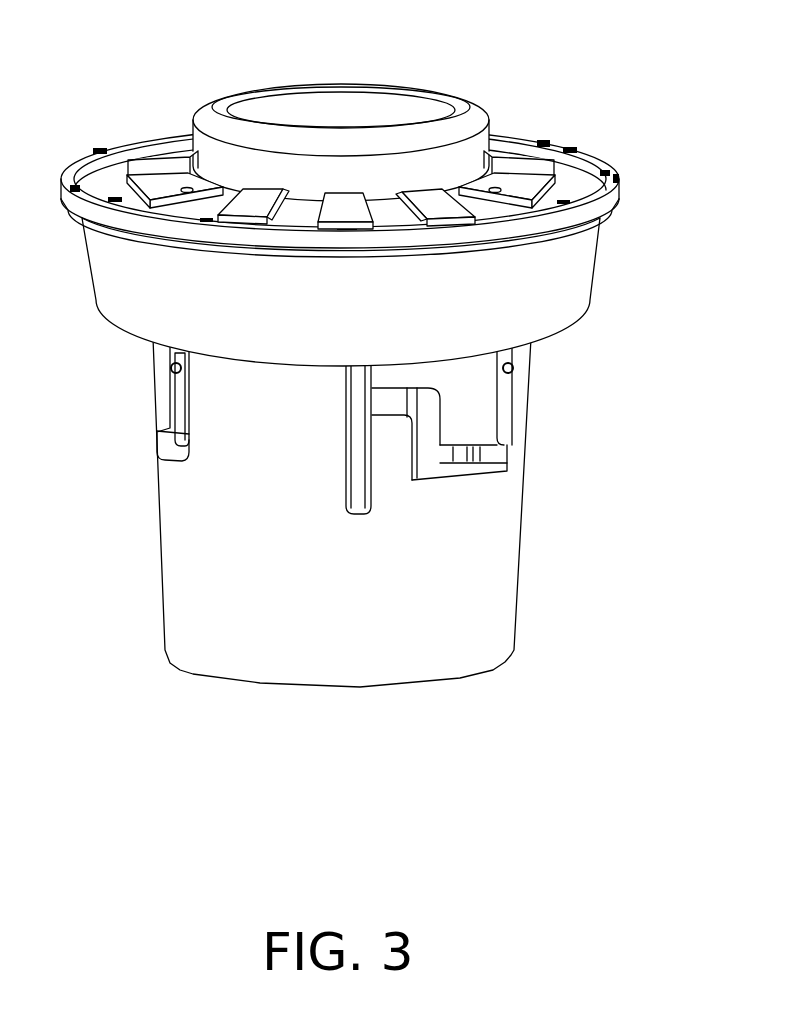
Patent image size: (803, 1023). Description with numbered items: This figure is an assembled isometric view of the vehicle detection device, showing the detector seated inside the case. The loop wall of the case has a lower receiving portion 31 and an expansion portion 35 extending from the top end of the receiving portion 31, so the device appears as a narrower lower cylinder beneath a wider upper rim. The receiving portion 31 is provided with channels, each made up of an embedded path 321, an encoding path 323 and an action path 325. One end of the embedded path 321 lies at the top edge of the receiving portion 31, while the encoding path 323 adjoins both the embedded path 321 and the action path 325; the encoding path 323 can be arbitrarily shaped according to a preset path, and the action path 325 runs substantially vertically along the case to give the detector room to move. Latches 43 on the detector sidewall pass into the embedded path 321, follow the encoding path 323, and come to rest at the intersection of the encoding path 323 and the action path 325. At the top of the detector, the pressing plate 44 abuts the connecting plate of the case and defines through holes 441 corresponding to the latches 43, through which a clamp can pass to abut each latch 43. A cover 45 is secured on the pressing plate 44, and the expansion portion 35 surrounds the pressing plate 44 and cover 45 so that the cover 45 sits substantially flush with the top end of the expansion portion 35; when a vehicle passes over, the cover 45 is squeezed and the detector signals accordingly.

The receiving portion 31 is at (488, 608).
The expansion portion 35 is at (555, 293).
The latch 43 is at (512, 370).
The pressing plate 44 is at (553, 216).
The cover 45 is at (370, 103).
The embedded path 321 is at (505, 437).
The encoding path 323 is at (480, 463).
The action path 325 is at (360, 472).
The through hole 441 is at (497, 178).